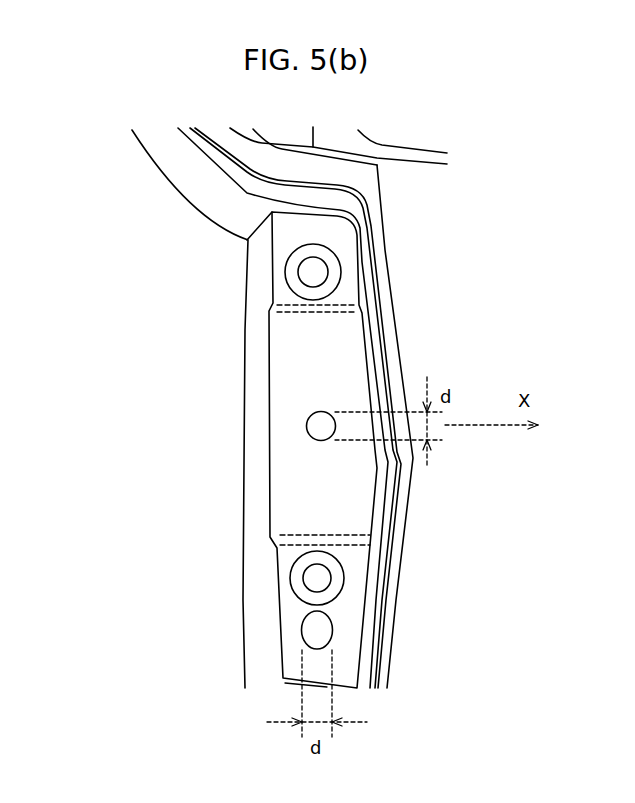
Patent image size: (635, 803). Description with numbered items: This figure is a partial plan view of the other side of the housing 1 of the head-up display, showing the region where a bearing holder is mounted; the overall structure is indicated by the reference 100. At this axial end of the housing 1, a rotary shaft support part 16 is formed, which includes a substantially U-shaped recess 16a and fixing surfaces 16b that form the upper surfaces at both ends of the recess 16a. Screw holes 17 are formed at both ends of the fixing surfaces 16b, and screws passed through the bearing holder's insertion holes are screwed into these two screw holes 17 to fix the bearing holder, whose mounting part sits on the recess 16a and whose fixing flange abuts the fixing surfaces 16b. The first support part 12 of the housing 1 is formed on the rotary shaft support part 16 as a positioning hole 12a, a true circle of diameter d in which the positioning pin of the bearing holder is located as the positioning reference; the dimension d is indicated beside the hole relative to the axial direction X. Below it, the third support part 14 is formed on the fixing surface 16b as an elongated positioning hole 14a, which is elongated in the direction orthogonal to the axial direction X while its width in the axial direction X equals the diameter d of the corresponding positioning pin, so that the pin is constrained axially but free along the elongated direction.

The housing 1 is at (435, 207).
The vehicle body side structure 100 is at (503, 233).
The first support part 12 is at (252, 408).
The positioning hole 12a is at (306, 427).
The third support part 14 is at (407, 630).
The elongated positioning hole 14a is at (320, 628).
The rotary shaft support part 16 is at (379, 450).
The recess 16a is at (331, 353).
The fixing surface 16b is at (288, 238).
The screw hole 17 is at (320, 272).